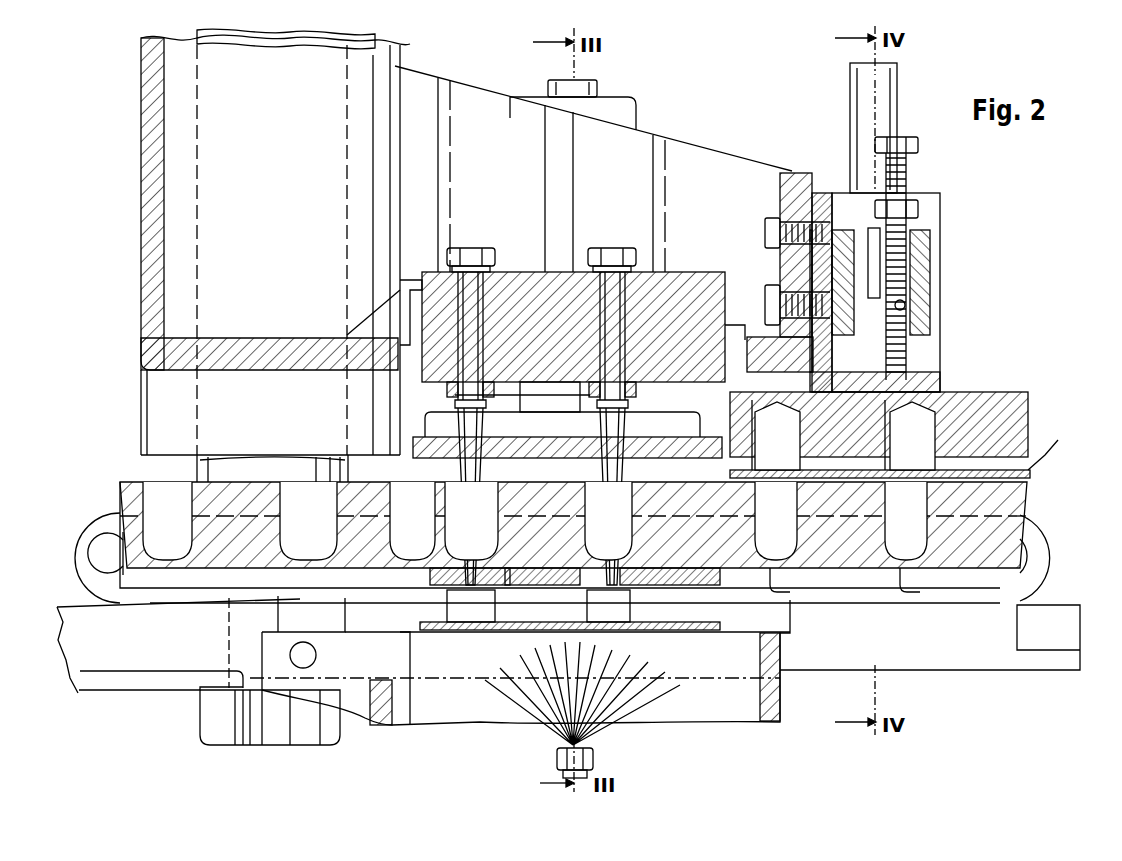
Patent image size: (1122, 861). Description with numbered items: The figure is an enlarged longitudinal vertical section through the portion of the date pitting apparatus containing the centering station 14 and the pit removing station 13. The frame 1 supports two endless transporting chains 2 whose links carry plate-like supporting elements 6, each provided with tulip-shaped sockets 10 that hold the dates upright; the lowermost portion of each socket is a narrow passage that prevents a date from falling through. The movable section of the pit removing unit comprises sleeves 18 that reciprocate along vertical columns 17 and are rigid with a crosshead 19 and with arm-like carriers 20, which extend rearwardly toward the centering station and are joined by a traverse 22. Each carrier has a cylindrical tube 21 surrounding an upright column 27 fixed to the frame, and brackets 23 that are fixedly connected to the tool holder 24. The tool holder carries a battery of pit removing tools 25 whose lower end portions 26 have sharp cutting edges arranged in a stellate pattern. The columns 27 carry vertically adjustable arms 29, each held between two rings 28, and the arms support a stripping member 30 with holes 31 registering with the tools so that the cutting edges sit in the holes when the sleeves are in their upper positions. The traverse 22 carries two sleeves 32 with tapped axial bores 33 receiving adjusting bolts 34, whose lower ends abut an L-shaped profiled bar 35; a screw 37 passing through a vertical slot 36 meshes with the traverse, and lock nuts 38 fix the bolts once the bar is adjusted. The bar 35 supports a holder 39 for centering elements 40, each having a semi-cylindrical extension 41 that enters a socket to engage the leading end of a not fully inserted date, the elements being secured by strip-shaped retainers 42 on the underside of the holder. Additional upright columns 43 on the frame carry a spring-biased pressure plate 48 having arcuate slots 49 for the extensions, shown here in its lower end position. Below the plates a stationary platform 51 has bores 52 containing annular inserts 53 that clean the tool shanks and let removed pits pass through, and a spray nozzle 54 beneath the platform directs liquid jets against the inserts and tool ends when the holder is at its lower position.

The frame 1 is at (778, 716).
The endless transporting chain 2 is at (1078, 548).
The plate-like supporting element 6 is at (350, 500).
The socket 10 is at (165, 488).
The pit removing station 13 is at (722, 162).
The centering station 14 is at (940, 258).
The vertical column 17 is at (400, 45).
The sleeve 18 is at (380, 98).
The crosshead 19 is at (250, 356).
The arm-like carrier 20 is at (690, 160).
The cylindrical tube 21 is at (620, 108).
The traverse 22 is at (797, 176).
The bracket 23 is at (735, 335).
The tool holder 24 is at (682, 300).
The pit removing tool 25 is at (470, 318).
The lower end portion of tool 26 is at (485, 590).
The upright column 27 is at (585, 92).
The ring 28 is at (446, 400).
The vertically adjustable arm 29 is at (670, 430).
The stripping member 30 is at (700, 450).
The hole 31 is at (620, 425).
The sleeve 32 is at (920, 265).
The tapped axial bore 33 is at (905, 305).
The adjusting bolt 34 is at (900, 175).
The profiled bar 35 is at (822, 190).
The vertical slot 36 is at (776, 290).
The screw 37 is at (765, 232).
The lock nut 38 is at (905, 207).
The holder 39 is at (1010, 410).
The centering element 40 is at (790, 450).
The semi-cylindrical extension 41 is at (787, 560).
The strip-shaped retainer 42 is at (826, 410).
The upright column 43 is at (888, 100).
The pressure plate 48 is at (1060, 450).
The arcuate slot 49 is at (750, 400).
The stationary platform 51 is at (735, 632).
The bore 52 is at (540, 620).
The annular insert 53 is at (570, 505).
The spray nozzle 54 is at (595, 758).